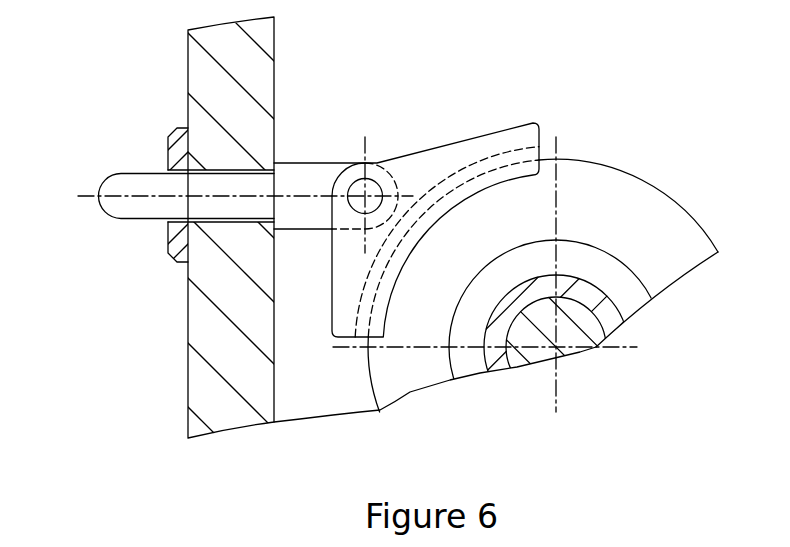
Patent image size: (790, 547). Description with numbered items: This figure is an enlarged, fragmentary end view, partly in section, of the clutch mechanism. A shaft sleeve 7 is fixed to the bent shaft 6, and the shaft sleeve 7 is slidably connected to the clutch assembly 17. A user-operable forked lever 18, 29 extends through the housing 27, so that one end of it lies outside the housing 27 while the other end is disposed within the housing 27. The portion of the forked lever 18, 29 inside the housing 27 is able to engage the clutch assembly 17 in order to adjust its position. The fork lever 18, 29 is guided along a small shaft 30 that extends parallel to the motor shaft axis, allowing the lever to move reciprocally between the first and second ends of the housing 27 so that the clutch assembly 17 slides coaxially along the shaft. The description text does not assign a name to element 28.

The bent shaft 6 is at (570, 333).
The shaft sleeve 7 is at (587, 293).
The clutch assembly 17 is at (588, 192).
The forked lever 18 is at (517, 147).
The housing 27 is at (213, 348).
The nut 28 is at (172, 255).
The forked lever 29 is at (120, 198).
The small shaft 30 is at (357, 188).